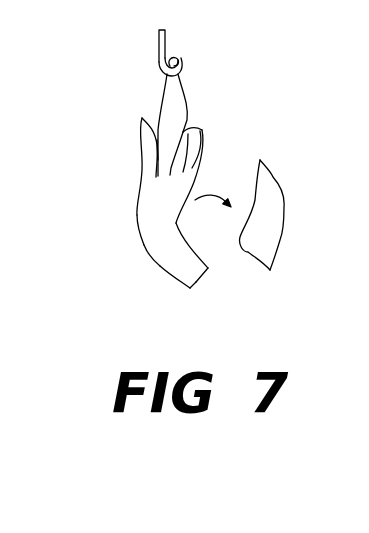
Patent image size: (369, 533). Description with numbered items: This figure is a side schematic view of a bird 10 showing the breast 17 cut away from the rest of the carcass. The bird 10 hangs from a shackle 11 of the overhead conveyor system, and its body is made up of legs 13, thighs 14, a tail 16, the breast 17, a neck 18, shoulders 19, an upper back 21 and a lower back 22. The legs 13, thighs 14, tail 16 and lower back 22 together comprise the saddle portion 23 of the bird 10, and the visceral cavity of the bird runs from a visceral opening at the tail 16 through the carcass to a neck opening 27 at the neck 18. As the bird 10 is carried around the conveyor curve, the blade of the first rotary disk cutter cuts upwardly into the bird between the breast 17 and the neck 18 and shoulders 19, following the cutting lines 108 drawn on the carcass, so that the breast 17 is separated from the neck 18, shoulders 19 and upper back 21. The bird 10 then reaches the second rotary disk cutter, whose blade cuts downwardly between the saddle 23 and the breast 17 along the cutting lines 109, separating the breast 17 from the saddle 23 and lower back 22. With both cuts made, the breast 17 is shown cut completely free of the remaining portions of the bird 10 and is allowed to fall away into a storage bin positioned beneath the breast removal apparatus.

The bird 10 is at (160, 178).
The shackle 11 is at (158, 44).
The legs 13 is at (173, 90).
The thighs 14 is at (184, 130).
The tail 16 is at (142, 118).
The breast 17 is at (272, 197).
The neck 18 is at (192, 291).
The shoulders 19 is at (177, 281).
The upper back 21 is at (150, 260).
The lower back 22 is at (140, 188).
The saddle portion 23 is at (146, 160).
The neck opening 27 is at (206, 280).
The cutting lines 108 is at (177, 223).
The cutting lines 109 is at (246, 140).